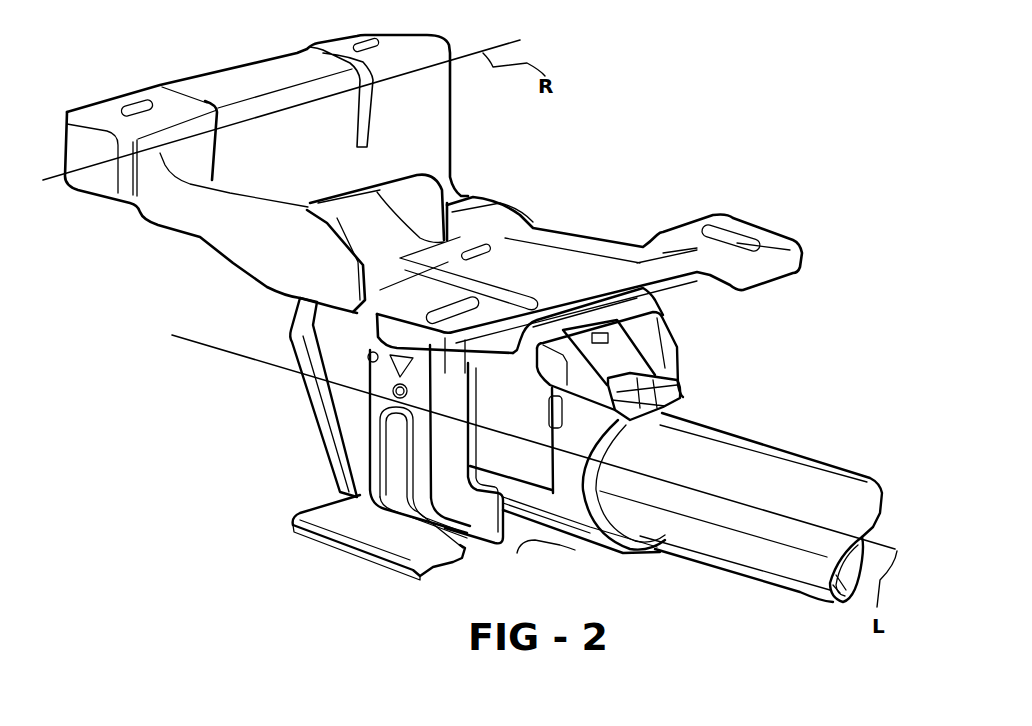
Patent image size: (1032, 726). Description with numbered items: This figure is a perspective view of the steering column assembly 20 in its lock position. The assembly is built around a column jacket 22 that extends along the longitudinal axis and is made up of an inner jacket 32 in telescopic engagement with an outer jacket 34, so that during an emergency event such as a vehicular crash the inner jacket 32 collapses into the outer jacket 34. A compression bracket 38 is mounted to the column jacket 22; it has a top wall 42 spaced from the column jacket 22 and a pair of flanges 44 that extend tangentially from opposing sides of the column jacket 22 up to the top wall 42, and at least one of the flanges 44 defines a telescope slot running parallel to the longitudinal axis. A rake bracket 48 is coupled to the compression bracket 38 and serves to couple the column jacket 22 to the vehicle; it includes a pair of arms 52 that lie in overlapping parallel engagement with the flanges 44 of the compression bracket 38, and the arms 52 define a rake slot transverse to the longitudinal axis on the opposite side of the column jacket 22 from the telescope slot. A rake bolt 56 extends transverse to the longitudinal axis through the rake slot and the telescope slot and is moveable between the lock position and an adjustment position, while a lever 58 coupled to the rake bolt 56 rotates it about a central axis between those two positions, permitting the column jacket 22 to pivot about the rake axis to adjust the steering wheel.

The steering column assembly 20 is at (701, 118).
The rake bracket 48 is at (533, 228).
The top wall 42 is at (640, 300).
The compression bracket 38 is at (677, 347).
The pair of flanges 44 is at (677, 363).
The inner jacket 32 is at (757, 583).
The column jacket 22 is at (600, 528).
The outer jacket 34 is at (520, 537).
The lever 58 is at (300, 530).
The pair of arms 52 is at (353, 415).
The rake bolt 56 is at (388, 363).